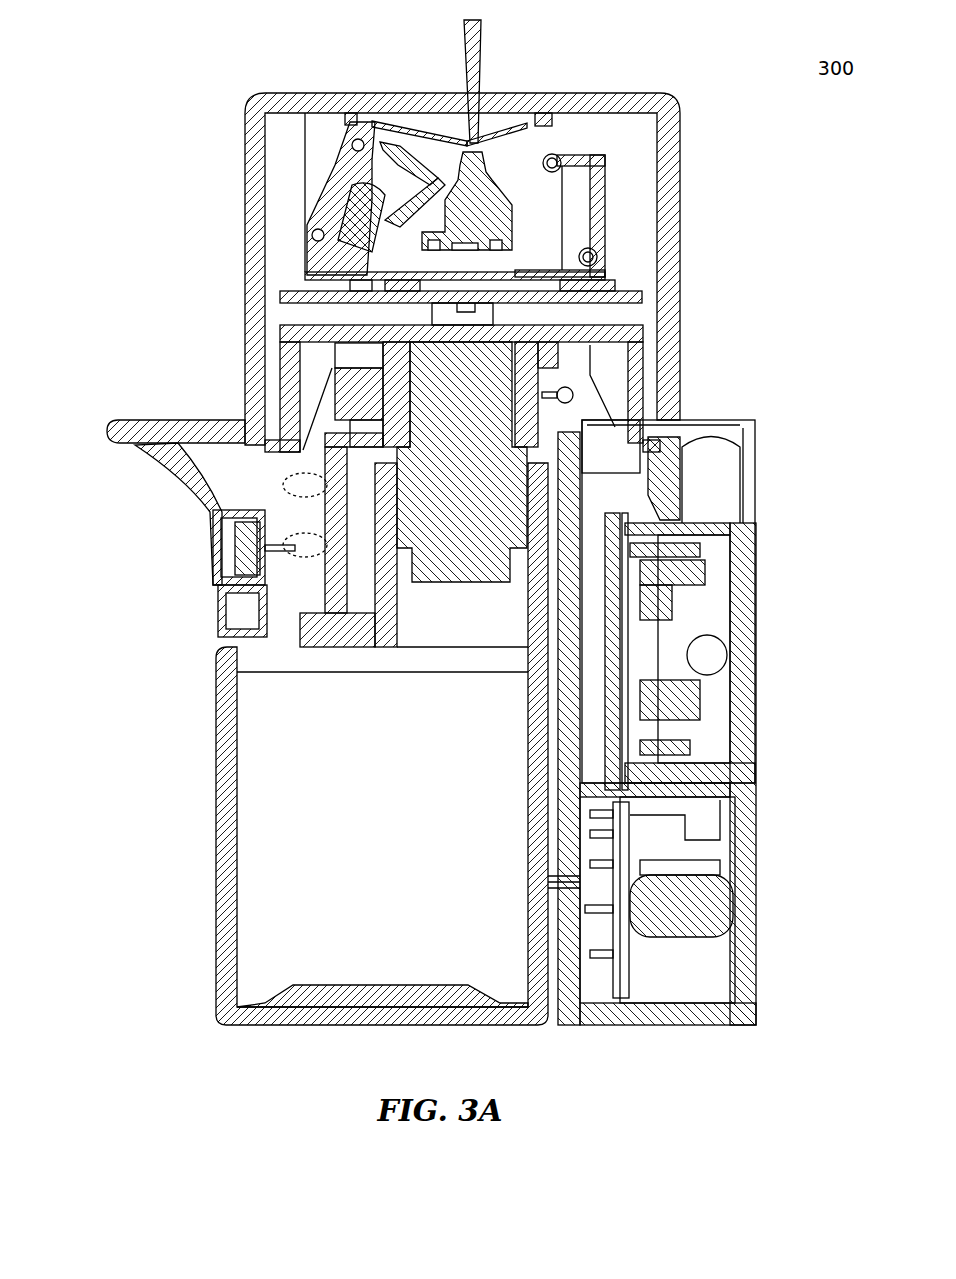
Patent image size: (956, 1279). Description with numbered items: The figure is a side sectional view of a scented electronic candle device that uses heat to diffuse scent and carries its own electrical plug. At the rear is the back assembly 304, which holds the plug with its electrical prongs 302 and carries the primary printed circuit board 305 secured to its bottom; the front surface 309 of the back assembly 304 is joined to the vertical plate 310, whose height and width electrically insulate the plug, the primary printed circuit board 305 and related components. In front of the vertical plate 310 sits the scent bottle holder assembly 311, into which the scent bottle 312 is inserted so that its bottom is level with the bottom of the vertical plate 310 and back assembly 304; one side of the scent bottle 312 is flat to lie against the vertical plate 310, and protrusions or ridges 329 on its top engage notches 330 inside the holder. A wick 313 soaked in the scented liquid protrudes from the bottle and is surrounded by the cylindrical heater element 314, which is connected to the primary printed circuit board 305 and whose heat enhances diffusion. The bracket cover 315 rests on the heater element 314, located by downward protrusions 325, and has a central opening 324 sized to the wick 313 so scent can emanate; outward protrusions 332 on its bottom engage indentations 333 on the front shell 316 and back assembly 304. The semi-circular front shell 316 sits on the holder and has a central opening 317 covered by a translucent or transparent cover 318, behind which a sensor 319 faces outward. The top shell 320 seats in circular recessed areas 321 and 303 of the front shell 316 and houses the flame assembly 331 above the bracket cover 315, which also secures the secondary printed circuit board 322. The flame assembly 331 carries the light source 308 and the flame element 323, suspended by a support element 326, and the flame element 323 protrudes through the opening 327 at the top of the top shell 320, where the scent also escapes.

The electrical prongs 302 is at (716, 466).
The circular recessed area 303 is at (650, 430).
The back assembly 304 is at (666, 460).
The primary printed circuit board 305 is at (631, 996).
The light source 308 is at (358, 182).
The front surface 309 is at (593, 982).
The vertical plate 310 is at (570, 1030).
The scent bottle holder assembly 311 is at (255, 599).
The scent bottle 312 is at (211, 938).
The wick 313 is at (447, 382).
The heater element 314 is at (394, 348).
The bracket cover 315 is at (281, 318).
The front shell 316 is at (248, 451).
The opening 317 is at (190, 500).
The translucent or transparent cover 318 is at (209, 550).
The sensor 319 is at (245, 550).
The top shell 320 is at (676, 179).
The circular recessed area 321 is at (251, 424).
The secondary printed circuit board 322 is at (624, 281).
The flame element 323 is at (495, 41).
The opening 324 is at (558, 280).
The protrusions 325 is at (360, 348).
The support element 326 is at (503, 110).
The opening 327 is at (396, 103).
The protrusions or ridges 329 is at (551, 516).
The notches 330 is at (571, 508).
The flame assembly 331 is at (608, 153).
The protrusions 332 is at (282, 412).
The indentations 333 is at (216, 468).